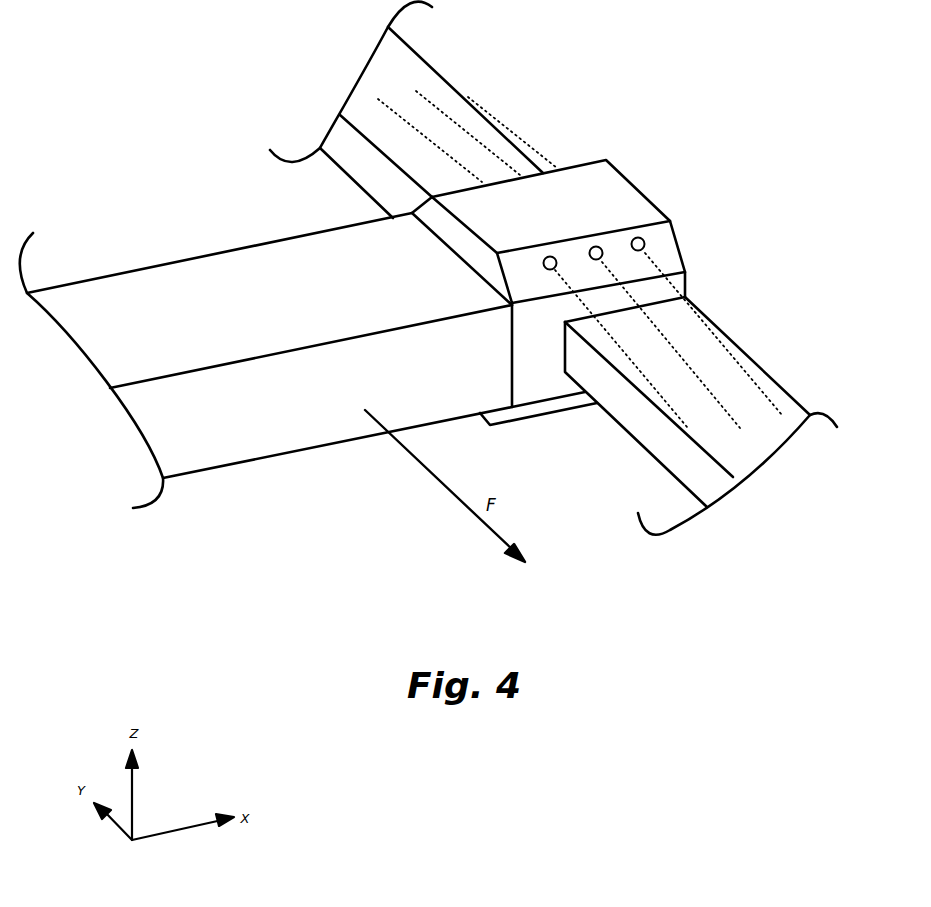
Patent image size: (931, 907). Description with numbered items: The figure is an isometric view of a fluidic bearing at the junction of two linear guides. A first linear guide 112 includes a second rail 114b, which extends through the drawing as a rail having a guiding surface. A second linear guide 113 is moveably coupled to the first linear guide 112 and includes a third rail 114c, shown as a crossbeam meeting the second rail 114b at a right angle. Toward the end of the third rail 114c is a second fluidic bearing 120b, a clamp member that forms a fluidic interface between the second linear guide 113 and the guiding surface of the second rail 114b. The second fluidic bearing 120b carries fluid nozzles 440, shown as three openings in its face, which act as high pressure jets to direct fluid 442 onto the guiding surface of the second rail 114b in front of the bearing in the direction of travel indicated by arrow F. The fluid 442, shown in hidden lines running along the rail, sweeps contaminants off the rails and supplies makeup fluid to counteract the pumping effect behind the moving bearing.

The first linear guide 112 is at (793, 393).
The second linear guide 113 is at (190, 258).
The second rail 114b is at (648, 433).
The third rail 114c is at (300, 430).
The second fluidic bearing 120b is at (623, 213).
The fluid nozzles 440 is at (596, 253).
The fluid 442 is at (530, 143).